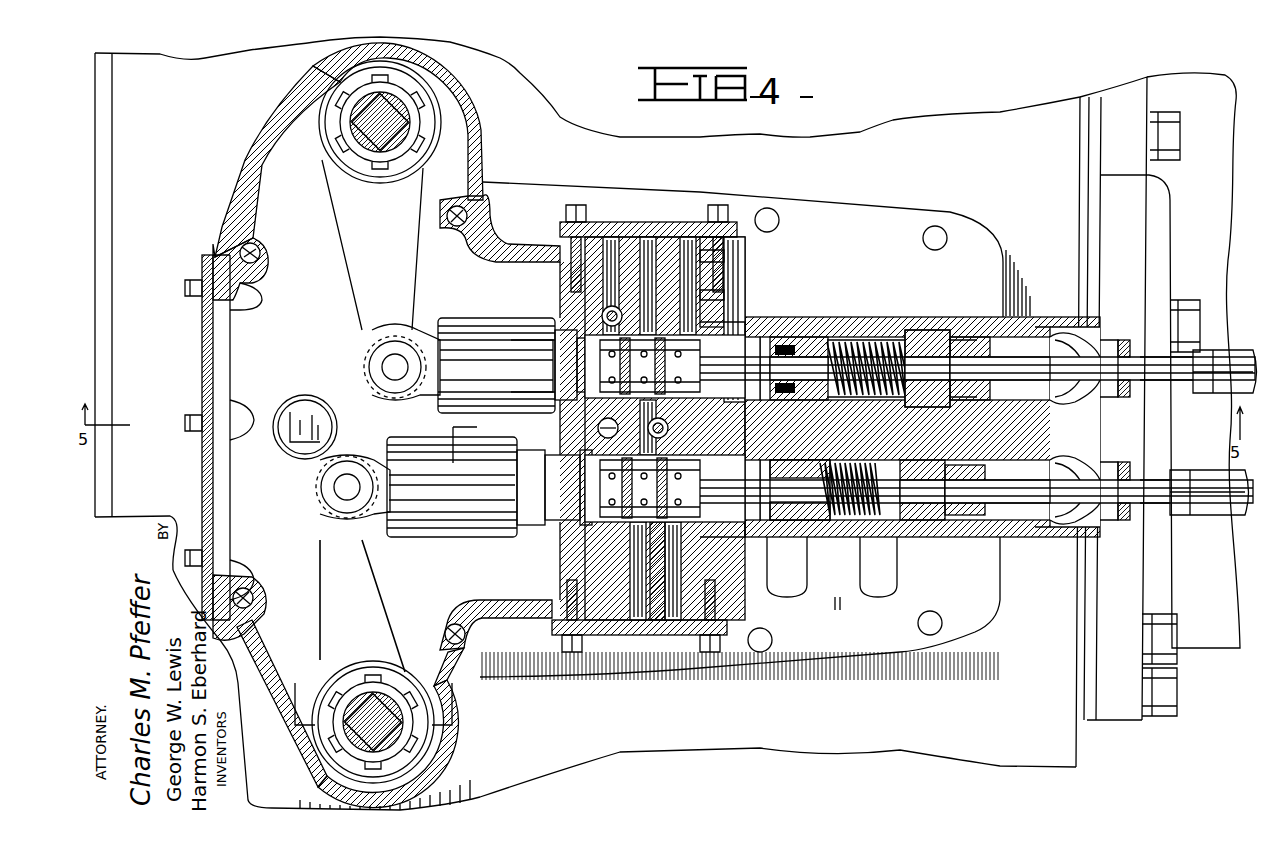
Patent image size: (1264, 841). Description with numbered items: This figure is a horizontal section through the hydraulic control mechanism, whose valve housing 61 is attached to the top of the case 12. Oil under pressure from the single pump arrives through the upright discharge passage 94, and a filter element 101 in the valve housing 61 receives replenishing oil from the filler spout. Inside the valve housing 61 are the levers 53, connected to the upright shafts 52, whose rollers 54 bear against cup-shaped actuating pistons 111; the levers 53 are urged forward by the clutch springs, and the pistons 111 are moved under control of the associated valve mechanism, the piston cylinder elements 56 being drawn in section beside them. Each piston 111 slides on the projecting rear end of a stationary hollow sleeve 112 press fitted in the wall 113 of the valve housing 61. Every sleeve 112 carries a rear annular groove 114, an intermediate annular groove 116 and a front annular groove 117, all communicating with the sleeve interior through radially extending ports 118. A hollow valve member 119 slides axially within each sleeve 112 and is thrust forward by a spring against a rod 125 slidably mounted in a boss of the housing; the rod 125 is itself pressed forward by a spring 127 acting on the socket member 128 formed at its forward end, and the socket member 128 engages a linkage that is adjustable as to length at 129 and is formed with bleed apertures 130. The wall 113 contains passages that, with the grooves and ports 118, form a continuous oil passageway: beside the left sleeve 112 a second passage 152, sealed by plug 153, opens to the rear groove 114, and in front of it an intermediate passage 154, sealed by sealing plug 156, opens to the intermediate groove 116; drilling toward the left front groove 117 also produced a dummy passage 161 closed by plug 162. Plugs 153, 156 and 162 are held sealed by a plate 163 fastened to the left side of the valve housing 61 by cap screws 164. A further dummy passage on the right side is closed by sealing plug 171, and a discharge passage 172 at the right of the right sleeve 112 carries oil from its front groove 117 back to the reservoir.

The case 12 is at (194, 67).
The upright shaft 52 is at (360, 118).
The lever 53 is at (335, 222).
The roller 54 is at (392, 394).
The cylinder 56 is at (451, 318).
The valve housing 61 is at (862, 595).
The upright discharge passage 94 is at (513, 353).
The filter element 101 is at (296, 390).
The actuating piston 111 is at (474, 290).
The stationary hollow sleeve 112 is at (565, 452).
The wall 113 is at (728, 310).
The rear annular groove 114 is at (580, 322).
The intermediate annular groove 116 is at (593, 345).
The front annular groove 117 is at (738, 325).
The radially extending port 118 is at (608, 356).
The hollow valve member 119 is at (760, 338).
The rod 125 is at (812, 354).
The spring 127 is at (928, 346).
The socket member 128 is at (1040, 345).
The length adjustment 129 is at (1210, 396).
The bleed aperture 130 is at (984, 330).
The second passage 152 is at (565, 296).
The plug 153 is at (563, 229).
The intermediate passage 154 is at (700, 270).
The sealing plug 156 is at (640, 240).
The dummy passage 161 is at (735, 285).
The plug 162 is at (730, 255).
The plate 163 is at (675, 290).
The cap screw 164 is at (578, 205).
The sealing plug 171 is at (630, 641).
The discharge passage 172 is at (680, 638).